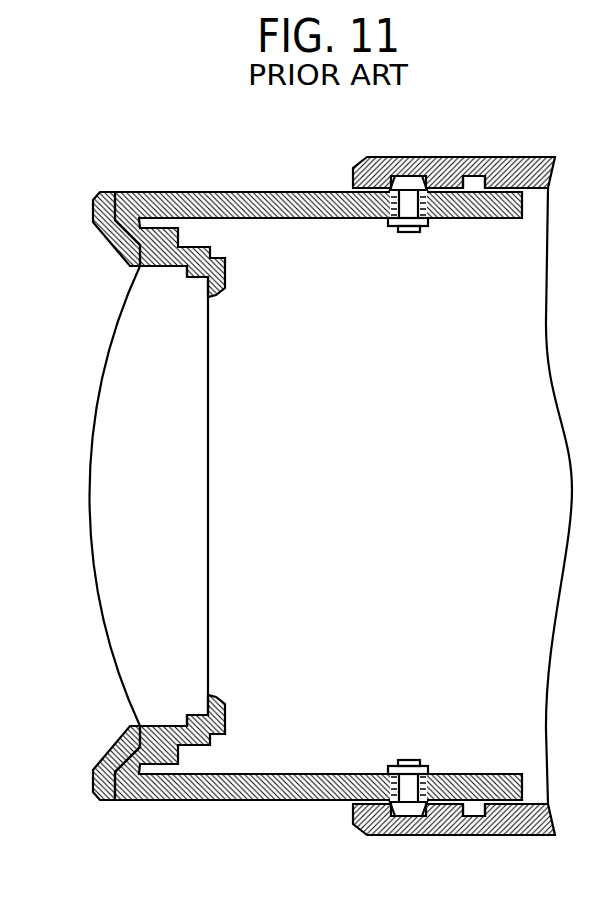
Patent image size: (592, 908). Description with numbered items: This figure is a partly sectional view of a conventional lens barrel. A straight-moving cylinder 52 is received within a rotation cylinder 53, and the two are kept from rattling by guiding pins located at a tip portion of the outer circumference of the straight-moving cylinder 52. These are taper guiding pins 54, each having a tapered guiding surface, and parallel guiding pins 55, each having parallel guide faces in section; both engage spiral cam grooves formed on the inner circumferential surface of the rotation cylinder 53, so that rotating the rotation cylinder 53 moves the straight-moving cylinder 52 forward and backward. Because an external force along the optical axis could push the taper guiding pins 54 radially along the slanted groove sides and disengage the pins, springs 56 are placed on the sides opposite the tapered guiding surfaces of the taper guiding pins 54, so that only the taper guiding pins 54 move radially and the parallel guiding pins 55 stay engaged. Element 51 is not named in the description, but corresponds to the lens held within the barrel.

The lens 51 is at (88, 478).
The straight-moving cylinder 52 is at (245, 192).
The rotation cylinder 53 is at (527, 157).
The taper guiding pin 54 is at (405, 180).
The parallel guiding pin 55 is at (472, 183).
The spring 56 is at (389, 211).